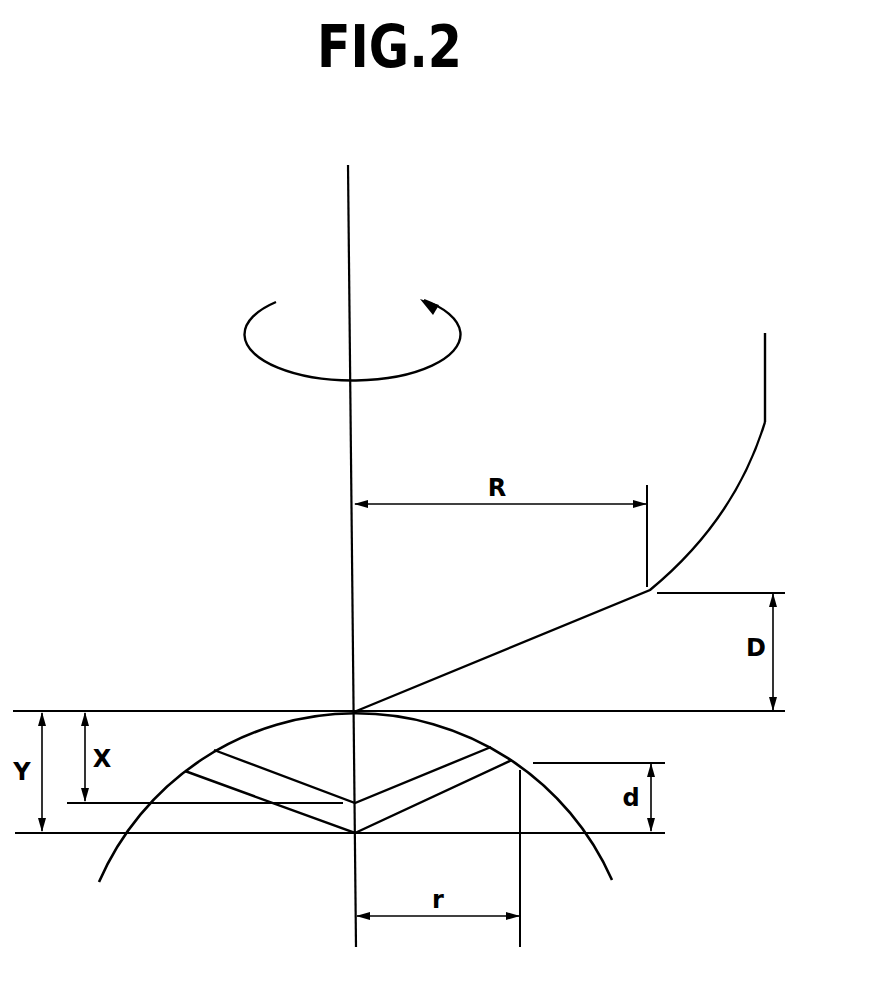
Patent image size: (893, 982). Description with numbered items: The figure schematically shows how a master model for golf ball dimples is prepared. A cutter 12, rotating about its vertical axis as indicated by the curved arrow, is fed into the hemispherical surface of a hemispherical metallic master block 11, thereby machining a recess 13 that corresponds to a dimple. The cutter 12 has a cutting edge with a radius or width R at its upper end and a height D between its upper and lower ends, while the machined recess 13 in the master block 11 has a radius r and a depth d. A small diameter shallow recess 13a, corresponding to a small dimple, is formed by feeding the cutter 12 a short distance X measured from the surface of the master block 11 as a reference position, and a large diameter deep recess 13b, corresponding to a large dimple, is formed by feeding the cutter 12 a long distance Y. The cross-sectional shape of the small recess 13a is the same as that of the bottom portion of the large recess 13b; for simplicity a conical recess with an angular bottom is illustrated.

The hemispherical metallic master block 11 is at (582, 865).
The cutter 12 is at (720, 465).
The recess 13 is at (450, 832).
The small recess 13a is at (295, 775).
The large recess 13b is at (215, 785).